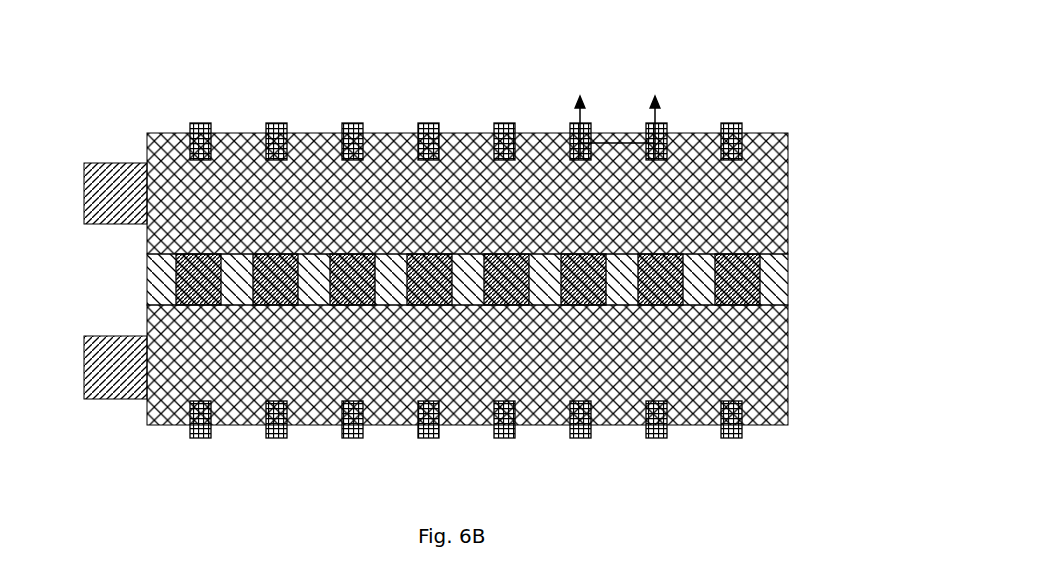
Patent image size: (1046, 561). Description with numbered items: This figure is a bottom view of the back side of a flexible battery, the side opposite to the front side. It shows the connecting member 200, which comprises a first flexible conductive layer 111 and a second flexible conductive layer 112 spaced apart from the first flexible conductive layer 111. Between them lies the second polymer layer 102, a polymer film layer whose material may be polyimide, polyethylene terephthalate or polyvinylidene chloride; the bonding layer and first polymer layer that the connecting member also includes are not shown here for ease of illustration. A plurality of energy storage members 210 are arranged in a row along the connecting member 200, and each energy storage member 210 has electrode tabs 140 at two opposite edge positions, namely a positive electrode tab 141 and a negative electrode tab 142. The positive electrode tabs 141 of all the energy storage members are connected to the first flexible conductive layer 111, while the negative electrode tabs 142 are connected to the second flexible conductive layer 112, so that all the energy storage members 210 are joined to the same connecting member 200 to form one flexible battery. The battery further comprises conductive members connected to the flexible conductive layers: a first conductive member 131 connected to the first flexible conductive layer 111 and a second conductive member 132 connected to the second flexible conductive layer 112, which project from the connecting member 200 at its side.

The connecting member 200 is at (473, 284).
The first flexible conductive layer 111 is at (780, 183).
The second flexible conductive layer 112 is at (780, 355).
The second polymer layer 102 is at (780, 255).
The energy storage member 210 is at (169, 264).
The first conductive member 131 is at (110, 155).
The second conductive member 132 is at (110, 328).
The electrode pads 140 is at (466, 284).
The positive electrode tab 141 is at (562, 118).
The negative electrode tab 142 is at (570, 432).